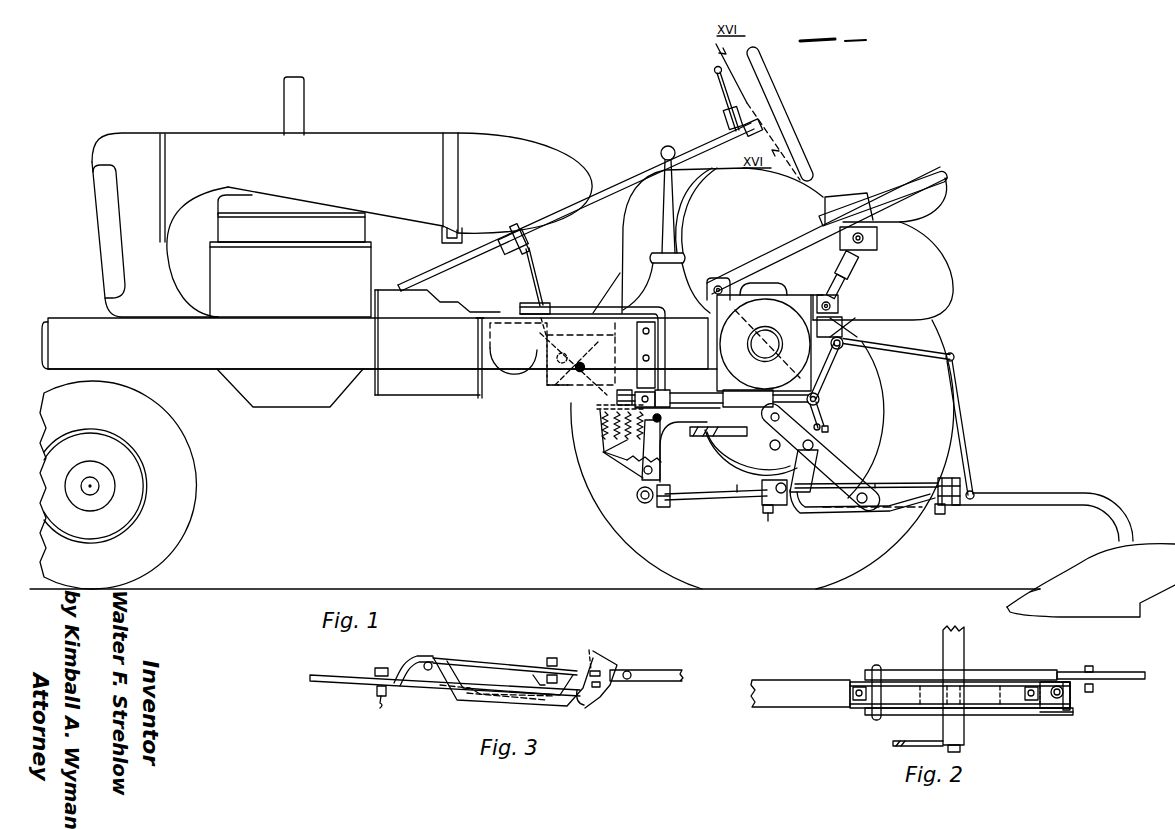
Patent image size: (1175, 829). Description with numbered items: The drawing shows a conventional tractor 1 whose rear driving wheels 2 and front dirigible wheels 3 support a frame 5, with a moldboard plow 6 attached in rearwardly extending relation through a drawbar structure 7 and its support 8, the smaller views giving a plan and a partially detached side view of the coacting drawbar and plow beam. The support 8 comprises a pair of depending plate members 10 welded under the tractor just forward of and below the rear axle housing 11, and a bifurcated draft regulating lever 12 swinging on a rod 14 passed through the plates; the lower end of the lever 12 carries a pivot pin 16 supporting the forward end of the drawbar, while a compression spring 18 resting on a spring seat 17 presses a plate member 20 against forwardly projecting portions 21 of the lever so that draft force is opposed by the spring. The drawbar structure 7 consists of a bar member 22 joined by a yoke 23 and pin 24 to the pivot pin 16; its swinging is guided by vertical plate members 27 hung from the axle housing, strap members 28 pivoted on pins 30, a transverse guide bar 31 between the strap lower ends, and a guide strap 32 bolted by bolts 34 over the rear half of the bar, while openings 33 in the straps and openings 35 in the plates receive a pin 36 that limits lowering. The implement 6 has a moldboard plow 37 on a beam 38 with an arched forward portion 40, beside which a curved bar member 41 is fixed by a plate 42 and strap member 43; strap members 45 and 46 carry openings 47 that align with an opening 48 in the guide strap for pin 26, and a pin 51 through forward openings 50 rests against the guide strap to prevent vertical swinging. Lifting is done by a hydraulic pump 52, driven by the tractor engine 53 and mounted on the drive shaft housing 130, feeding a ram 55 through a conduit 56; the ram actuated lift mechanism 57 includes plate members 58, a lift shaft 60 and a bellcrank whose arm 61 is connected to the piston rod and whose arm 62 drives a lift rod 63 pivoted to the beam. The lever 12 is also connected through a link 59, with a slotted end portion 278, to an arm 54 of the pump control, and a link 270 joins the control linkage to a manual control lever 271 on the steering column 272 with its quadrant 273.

In FIG. 1, the tractor 1 is at (342, 197).
In FIG. 1, the rear driving wheels 2 is at (924, 404).
In FIG. 1, the front dirigible wheels 3 is at (118, 485).
In FIG. 1, the frame 5 is at (197, 369).
In FIG. 1, the moldboard plow 6 is at (1128, 579).
In FIG. 1, the drawbar structure 7 is at (740, 481).
In FIG. 1, the support 8 is at (631, 457).
In FIG. 1, the plate members 10 is at (620, 465).
In FIG. 1, the rear axle housing 11 is at (814, 281).
In FIG. 1, the draft regulating lever 12 is at (661, 446).
In FIG. 1, the rod 14 is at (643, 472).
In FIG. 1, the pivot pin 16 is at (639, 500).
In FIG. 1, the spring seat 17 is at (603, 426).
In FIG. 1, the compression spring 18 is at (604, 452).
In FIG. 1, the plate member 20 is at (636, 400).
In FIG. 1, the forwardly projecting portions 21 is at (662, 419).
In FIG. 1, the bar member 22 is at (704, 500).
In FIG. 3, the bar member 22 is at (334, 681).
In FIG. 2, the bar member 22 is at (789, 680).
In FIG. 1, the yoke 23 is at (661, 507).
In FIG. 1, the pin 24 is at (670, 487).
In FIG. 1, the pin 26 is at (945, 478).
In FIG. 2, the pin 26 is at (1058, 686).
In FIG. 1, the vertical plate members 27 is at (822, 412).
In FIG. 1, the strap members 28 is at (831, 461).
In FIG. 2, the strap members 28 is at (924, 746).
In FIG. 1, the pins 30 is at (819, 401).
In FIG. 1, the guide bar 31 is at (876, 484).
In FIG. 2, the guide bar 31 is at (963, 665).
In FIG. 1, the guide strap 32 is at (906, 484).
In FIG. 3, the guide strap 32 is at (493, 660).
In FIG. 1, the openings 33 is at (806, 453).
In FIG. 1, the bolts 34 is at (769, 516).
In FIG. 3, the bolts 34 is at (381, 704).
In FIG. 2, the bolts 34 is at (859, 687).
In FIG. 1, the openings 35 is at (829, 429).
In FIG. 1, the pin 36 is at (770, 448).
In FIG. 1, the moldboard plow 37 is at (1080, 566).
In FIG. 1, the beam 38 is at (1027, 493).
In FIG. 3, the beam 38 is at (665, 670).
In FIG. 2, the beam 38 is at (1132, 672).
In FIG. 2, the arched forward portion 40 is at (915, 670).
In FIG. 1, the bar member 41 is at (818, 513).
In FIG. 3, the bar member 41 is at (529, 704).
In FIG. 2, the bar member 41 is at (986, 715).
In FIG. 1, the plate 42 is at (853, 513).
In FIG. 3, the plate 42 is at (480, 700).
In FIG. 2, the plate 42 is at (960, 695).
In FIG. 3, the strap member 43 is at (584, 705).
In FIG. 2, the strap member 43 is at (1048, 708).
In FIG. 3, the strap member 45 is at (587, 649).
In FIG. 2, the strap member 45 is at (1072, 700).
In FIG. 1, the strap member 46 is at (780, 364).
In FIG. 3, the strap member 46 is at (600, 687).
In FIG. 3, the openings 47 is at (596, 655).
In FIG. 3, the opening 48 is at (562, 652).
In FIG. 3, the openings 50 is at (433, 660).
In FIG. 1, the pin 51 is at (772, 485).
In FIG. 2, the pin 51 is at (873, 700).
In FIG. 1, the hydraulic pump 52 is at (489, 347).
In FIG. 1, the tractor engine 53 is at (311, 280).
In FIG. 1, the arm 54 is at (572, 388).
In FIG. 1, the ram 55 is at (736, 407).
In FIG. 1, the conduit 56 is at (579, 307).
In FIG. 1, the lift mechanism 57 is at (852, 347).
In FIG. 1, the plate members 58 is at (829, 327).
In FIG. 1, the link 59 is at (600, 406).
In FIG. 1, the lift shaft 60 is at (850, 327).
In FIG. 1, the arm 61 is at (825, 381).
In FIG. 1, the arm 62 is at (911, 348).
In FIG. 1, the lift rod 63 is at (962, 411).
In FIG. 2, the lift rod 63 is at (1093, 687).
In FIG. 1, the drive shaft housing 130 is at (480, 398).
In FIG. 1, the link 270 is at (539, 258).
In FIG. 1, the control lever 271 is at (721, 88).
In FIG. 1, the steering column 272 is at (641, 178).
In FIG. 1, the quadrant 273 is at (724, 118).
In FIG. 1, the slotted end portion 278 is at (579, 358).